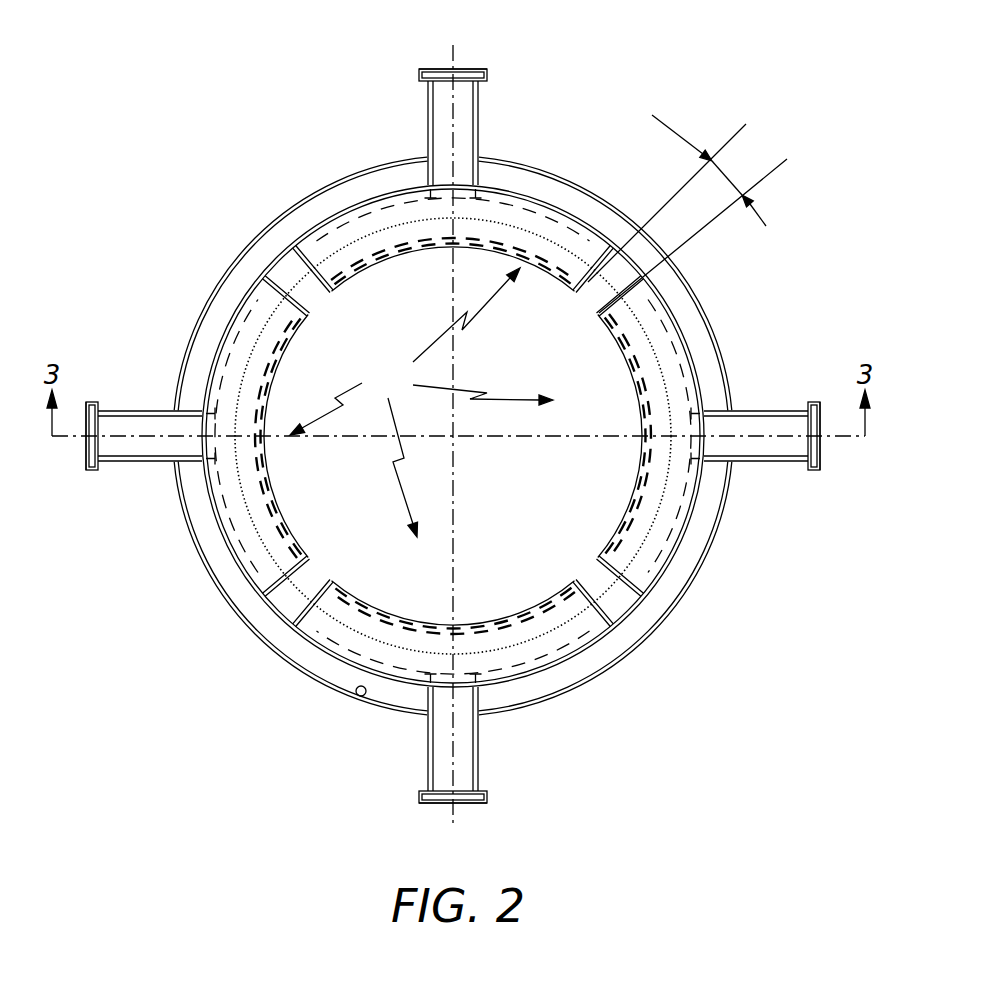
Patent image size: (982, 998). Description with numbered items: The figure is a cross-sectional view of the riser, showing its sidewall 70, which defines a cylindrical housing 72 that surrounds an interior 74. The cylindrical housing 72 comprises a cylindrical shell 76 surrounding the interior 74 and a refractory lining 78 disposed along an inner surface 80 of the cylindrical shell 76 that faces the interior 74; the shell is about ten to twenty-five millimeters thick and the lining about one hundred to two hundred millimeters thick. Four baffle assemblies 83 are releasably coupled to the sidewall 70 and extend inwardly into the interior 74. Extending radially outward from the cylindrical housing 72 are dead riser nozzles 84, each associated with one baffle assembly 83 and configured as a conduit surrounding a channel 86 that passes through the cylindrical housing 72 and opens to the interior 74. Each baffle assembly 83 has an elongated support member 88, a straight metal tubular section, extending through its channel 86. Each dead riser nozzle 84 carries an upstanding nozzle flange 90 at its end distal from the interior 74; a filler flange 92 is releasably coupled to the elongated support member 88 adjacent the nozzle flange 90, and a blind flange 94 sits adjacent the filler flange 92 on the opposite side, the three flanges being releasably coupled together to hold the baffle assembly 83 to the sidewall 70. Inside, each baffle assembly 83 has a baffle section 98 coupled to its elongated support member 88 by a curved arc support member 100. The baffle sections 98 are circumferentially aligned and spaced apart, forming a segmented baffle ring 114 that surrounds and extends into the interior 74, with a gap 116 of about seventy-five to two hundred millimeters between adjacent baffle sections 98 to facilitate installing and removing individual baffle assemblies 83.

The sidewall 70 is at (261, 230).
The cylindrical housing 72 is at (658, 624).
The interior 74 is at (458, 436).
The cylindrical shell 76 is at (627, 647).
The refractory lining 78 is at (617, 643).
The inner surface 80 is at (356, 695).
The baffle assembly 83 is at (360, 270).
The dead riser nozzle 84 is at (480, 100).
The channel 86 is at (455, 160).
The elongated support member 88 is at (428, 108).
The upstanding nozzle flange 90 is at (484, 79).
The filler flange 92 is at (418, 76).
The blind flange 94 is at (453, 68).
The baffle section 98 is at (537, 270).
The arc support member 100 is at (567, 203).
The segmented baffle ring 114 is at (421, 402).
The gap 116 is at (680, 136).